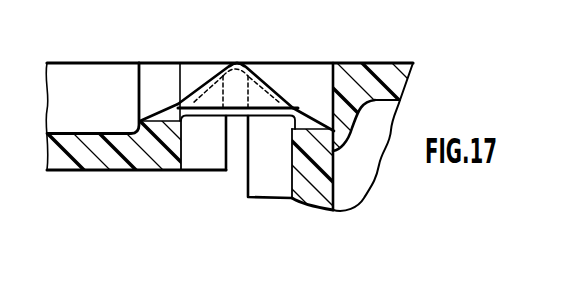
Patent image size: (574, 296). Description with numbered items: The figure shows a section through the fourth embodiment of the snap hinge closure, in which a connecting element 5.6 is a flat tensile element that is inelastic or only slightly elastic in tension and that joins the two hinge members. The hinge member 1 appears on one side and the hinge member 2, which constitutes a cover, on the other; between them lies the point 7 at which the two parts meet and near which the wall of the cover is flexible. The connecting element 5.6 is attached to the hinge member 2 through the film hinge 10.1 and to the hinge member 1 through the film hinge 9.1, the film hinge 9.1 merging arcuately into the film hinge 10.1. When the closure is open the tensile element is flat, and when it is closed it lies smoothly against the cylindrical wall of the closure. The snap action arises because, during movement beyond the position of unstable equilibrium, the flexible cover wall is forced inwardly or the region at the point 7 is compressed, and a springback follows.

The hinge member 1 is at (270, 182).
The hinge member 2 is at (92, 163).
The connecting element 5.6 is at (220, 93).
The point between the hinge members 7 is at (237, 63).
The film hinge 9.1 is at (299, 107).
The film hinge 10.1 is at (178, 112).